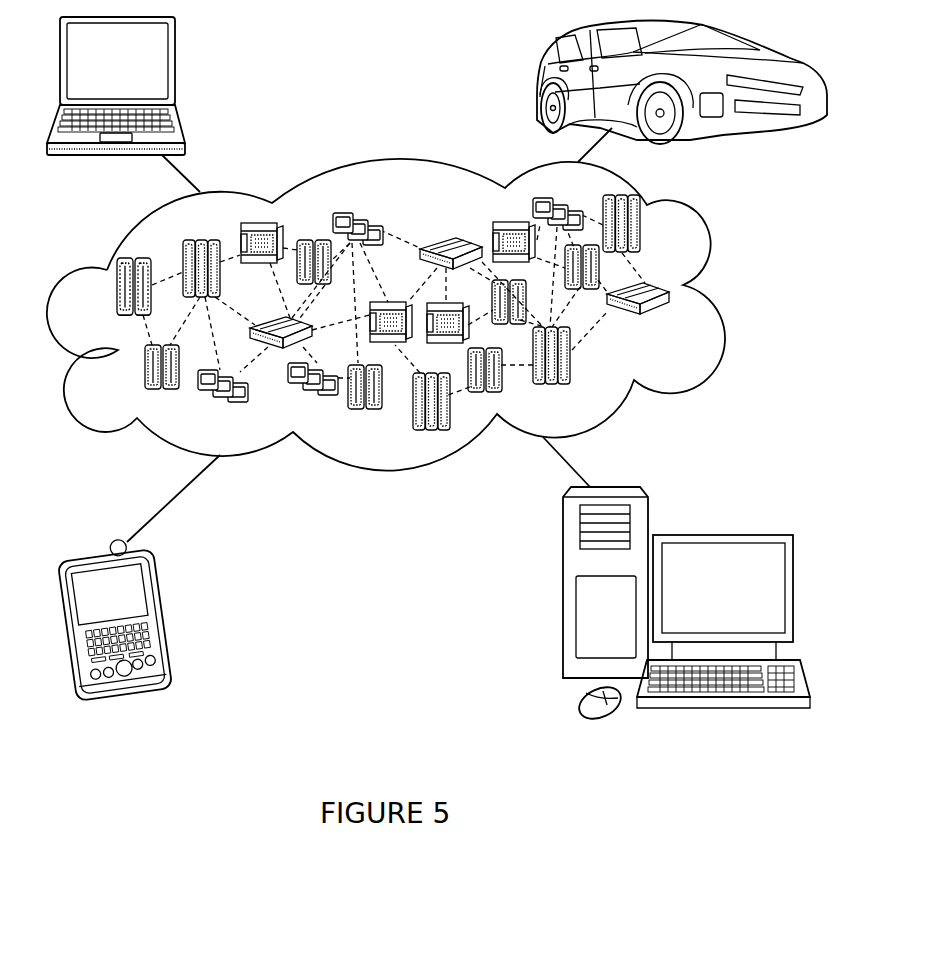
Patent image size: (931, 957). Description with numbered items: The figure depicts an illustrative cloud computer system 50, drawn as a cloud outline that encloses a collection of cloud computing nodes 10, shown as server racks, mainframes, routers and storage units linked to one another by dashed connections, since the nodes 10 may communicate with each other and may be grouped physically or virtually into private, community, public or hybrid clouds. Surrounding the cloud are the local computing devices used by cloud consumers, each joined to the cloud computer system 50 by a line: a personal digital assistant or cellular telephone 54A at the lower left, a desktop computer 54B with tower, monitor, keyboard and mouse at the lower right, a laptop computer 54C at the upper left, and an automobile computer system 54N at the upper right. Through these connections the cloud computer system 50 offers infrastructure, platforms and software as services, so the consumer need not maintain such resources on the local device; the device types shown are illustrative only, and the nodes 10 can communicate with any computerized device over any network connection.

The cloud computing node 10 is at (673, 322).
The cloud computer system 50 is at (720, 297).
The personal digital assistant (PDA) or cellular telephone 54A is at (167, 613).
The desktop computer 54B is at (722, 533).
The laptop computer 54C is at (175, 70).
The automobile computer system 54N is at (540, 80).